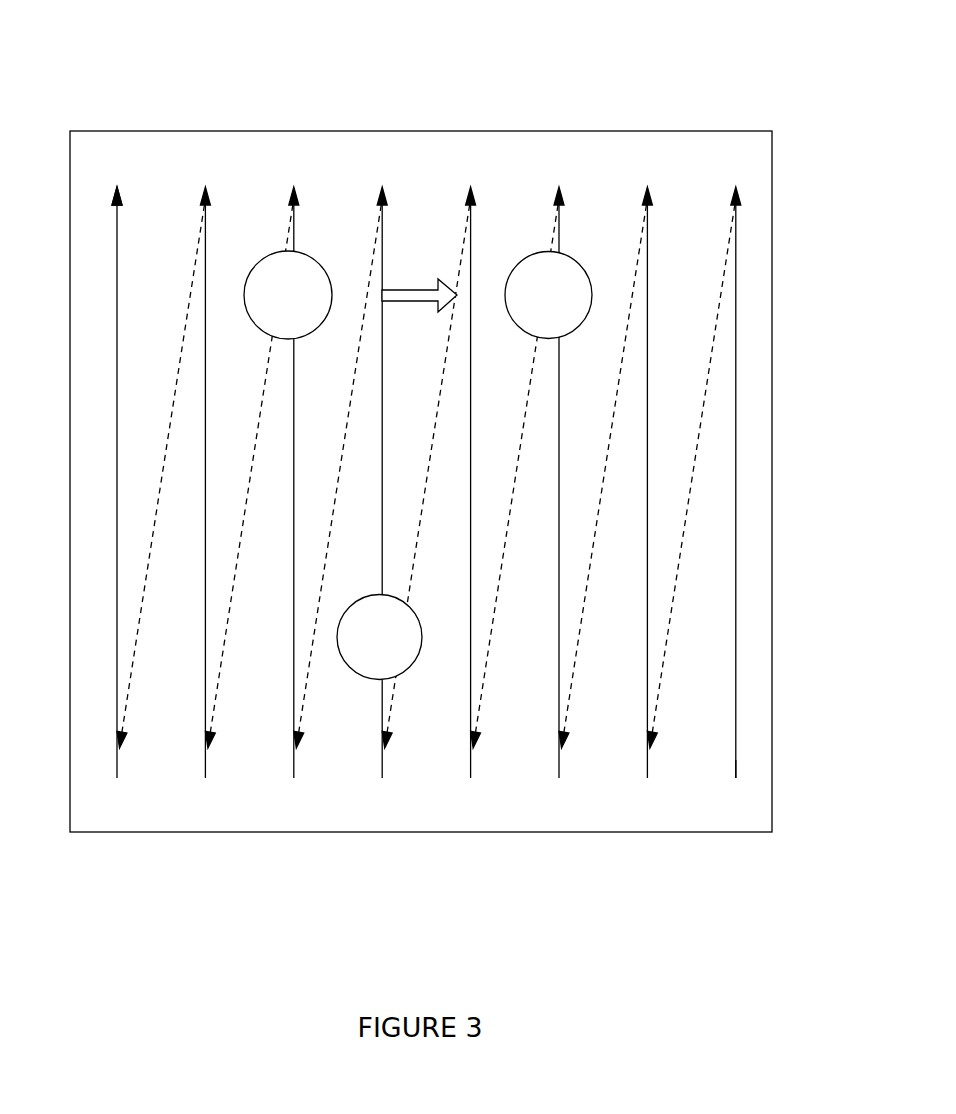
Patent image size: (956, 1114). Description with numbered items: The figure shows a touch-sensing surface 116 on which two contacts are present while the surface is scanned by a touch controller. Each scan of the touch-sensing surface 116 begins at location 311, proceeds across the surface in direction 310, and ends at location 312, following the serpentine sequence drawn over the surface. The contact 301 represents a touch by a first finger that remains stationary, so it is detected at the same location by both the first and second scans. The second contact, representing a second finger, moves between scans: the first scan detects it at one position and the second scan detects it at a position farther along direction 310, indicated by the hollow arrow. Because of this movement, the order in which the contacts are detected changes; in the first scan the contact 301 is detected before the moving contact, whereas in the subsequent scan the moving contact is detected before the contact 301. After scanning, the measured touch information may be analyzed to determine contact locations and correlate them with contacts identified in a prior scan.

The touch-sensing surface 116 is at (612, 106).
The scan direction 310 is at (749, 431).
The beginning of scan location 311 is at (726, 785).
The end of scan location 312 is at (121, 176).
The contact 301 is at (379, 637).